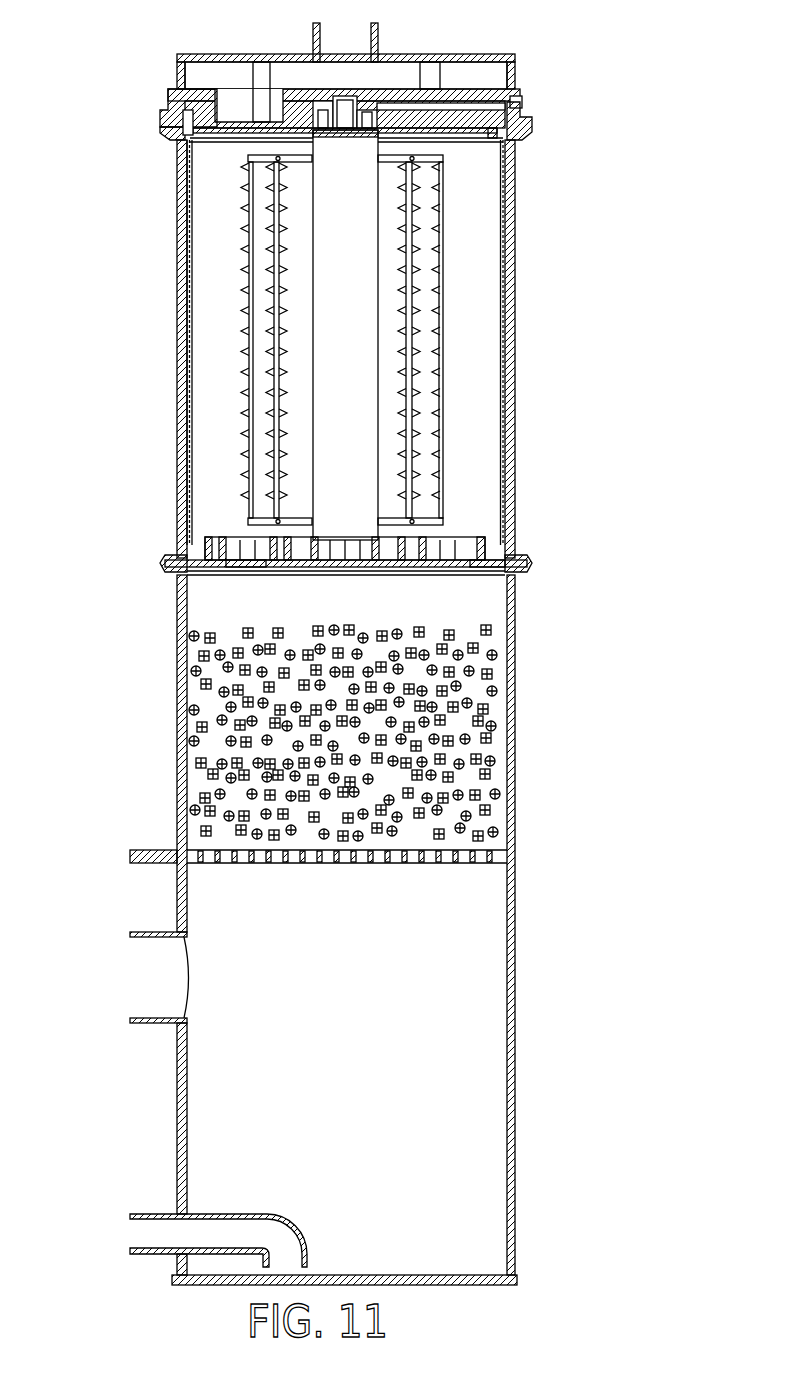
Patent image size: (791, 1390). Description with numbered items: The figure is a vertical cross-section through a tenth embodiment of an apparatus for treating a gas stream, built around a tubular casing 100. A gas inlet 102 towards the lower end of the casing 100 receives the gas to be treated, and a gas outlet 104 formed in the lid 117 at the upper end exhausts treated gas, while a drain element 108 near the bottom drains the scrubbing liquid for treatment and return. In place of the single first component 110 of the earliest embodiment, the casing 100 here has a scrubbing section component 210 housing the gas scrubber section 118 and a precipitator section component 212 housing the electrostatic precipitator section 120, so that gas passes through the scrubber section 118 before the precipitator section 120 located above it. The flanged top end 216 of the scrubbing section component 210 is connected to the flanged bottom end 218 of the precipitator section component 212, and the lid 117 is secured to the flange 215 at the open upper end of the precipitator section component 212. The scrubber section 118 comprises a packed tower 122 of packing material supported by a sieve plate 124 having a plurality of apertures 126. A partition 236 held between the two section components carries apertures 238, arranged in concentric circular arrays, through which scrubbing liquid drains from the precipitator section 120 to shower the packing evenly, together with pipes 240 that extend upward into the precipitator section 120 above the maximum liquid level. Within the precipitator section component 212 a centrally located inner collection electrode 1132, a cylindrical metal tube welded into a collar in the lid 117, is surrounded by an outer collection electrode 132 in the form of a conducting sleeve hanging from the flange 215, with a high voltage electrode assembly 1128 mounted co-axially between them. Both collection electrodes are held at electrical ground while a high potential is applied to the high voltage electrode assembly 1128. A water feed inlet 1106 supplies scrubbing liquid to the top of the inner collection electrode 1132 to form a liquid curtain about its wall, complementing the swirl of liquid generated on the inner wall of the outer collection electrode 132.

The casing 100 is at (321, 642).
The gas inlet 102 is at (130, 975).
The gas outlet 104 is at (312, 32).
The drain element 108 is at (139, 1233).
The first component 110 is at (176, 710).
The lid 117 is at (487, 52).
The gas scrubber section 118 is at (308, 923).
The electrostatic precipitator section 120 is at (299, 349).
The packed tower 122 is at (507, 735).
The sieve plate 124 is at (318, 885).
The apertures 126 is at (263, 863).
The outer collection electrode 132 is at (504, 235).
The scrubbing section component 210 is at (515, 783).
The precipitator section component 212 is at (175, 338).
The flange 215 is at (528, 133).
The flanged top end 216 is at (527, 572).
The flanged bottom end 218 is at (526, 560).
The partition 236 is at (492, 575).
The apertures 238 is at (262, 575).
The pipes 240 is at (472, 540).
The water feed inlet 1106 is at (520, 101).
The high voltage electrode assembly 1128 is at (441, 382).
The inner collection electrode 1132 is at (378, 285).